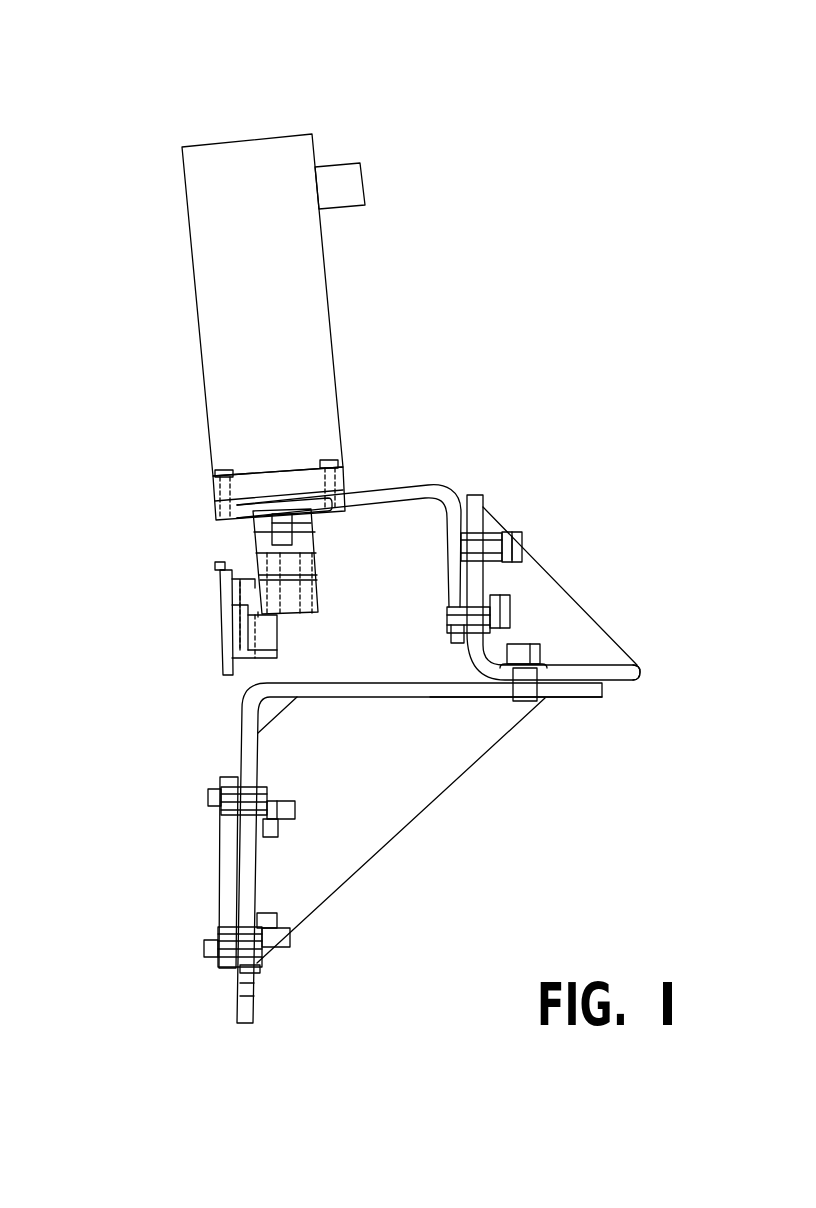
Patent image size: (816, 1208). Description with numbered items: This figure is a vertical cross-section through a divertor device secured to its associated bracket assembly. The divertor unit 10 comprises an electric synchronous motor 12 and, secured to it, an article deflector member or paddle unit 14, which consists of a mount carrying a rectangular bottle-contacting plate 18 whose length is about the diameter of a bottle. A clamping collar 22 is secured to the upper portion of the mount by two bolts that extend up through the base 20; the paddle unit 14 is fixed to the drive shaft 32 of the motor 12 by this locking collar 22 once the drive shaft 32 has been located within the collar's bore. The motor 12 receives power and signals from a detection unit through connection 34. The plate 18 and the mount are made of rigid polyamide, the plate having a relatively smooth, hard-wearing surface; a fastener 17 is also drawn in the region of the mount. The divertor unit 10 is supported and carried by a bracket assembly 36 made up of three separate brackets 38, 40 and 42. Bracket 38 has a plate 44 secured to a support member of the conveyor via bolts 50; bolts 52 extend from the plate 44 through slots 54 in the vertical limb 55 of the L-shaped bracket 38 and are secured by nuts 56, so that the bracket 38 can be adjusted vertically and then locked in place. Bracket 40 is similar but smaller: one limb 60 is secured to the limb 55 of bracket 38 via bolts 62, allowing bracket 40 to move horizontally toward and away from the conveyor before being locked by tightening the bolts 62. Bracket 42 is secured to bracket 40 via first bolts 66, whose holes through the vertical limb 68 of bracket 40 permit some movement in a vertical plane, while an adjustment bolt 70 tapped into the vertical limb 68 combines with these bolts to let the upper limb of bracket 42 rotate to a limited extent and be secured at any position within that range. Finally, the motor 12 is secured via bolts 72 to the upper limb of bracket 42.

The divertor unit 10 is at (105, 342).
The electric synchronous motor 12 is at (287, 136).
The paddle unit 14 is at (216, 590).
The fastener 17 is at (278, 618).
The bottle-contacting plate 18 is at (226, 666).
The base 20 is at (278, 647).
The clamping collar 22 is at (318, 556).
The drive shaft 32 is at (255, 516).
The connection 34 is at (353, 177).
The bracket assembly 36 is at (446, 491).
The L-shaped bracket 38 is at (420, 810).
The bracket 40 is at (593, 615).
The bracket 42 is at (405, 482).
The plate 44 is at (220, 874).
The bolts 50 is at (208, 790).
The bolts 52 is at (287, 925).
The slots 54 is at (247, 742).
The vertical limb 55 is at (428, 698).
The nuts 56 is at (263, 914).
The limb 60 is at (623, 675).
The bolts 62 is at (541, 655).
The first bolts 66 is at (512, 606).
The vertical limb 68 is at (478, 494).
The adjustment bolt 70 is at (508, 535).
The bolts 72 is at (208, 487).